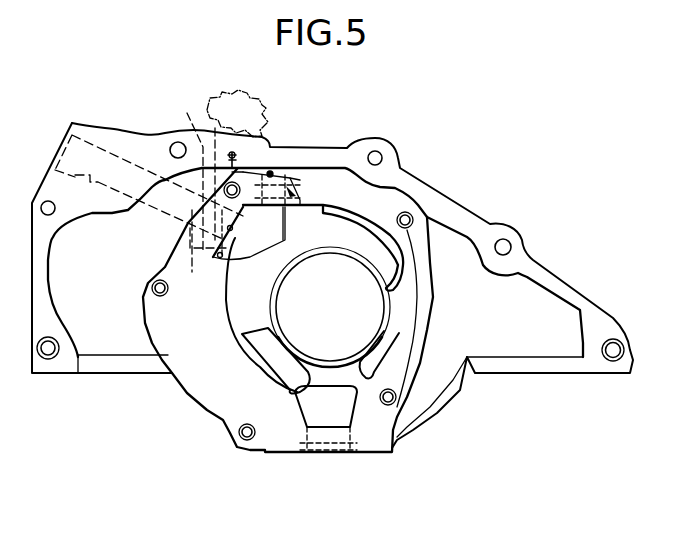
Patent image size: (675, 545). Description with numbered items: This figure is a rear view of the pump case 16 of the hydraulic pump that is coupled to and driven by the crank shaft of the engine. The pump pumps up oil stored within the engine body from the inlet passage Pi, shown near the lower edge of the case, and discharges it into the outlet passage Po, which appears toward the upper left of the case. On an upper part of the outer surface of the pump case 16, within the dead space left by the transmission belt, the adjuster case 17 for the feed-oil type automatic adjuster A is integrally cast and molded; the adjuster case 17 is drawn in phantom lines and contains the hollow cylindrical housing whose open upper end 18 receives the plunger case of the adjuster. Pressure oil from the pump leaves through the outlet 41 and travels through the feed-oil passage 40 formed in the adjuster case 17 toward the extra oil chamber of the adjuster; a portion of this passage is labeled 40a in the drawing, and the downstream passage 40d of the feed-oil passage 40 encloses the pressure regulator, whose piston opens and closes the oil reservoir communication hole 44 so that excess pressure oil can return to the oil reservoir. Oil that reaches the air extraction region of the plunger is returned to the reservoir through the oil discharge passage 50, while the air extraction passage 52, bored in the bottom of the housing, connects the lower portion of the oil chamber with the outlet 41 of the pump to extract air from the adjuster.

The pump case 16 is at (403, 175).
The adjuster case 17 is at (183, 283).
The open upper end 18 is at (162, 159).
The feed-oil passage 40 is at (292, 200).
The lever arm portion 40a is at (266, 222).
The downstream passage 40d is at (315, 180).
The outlet 41 is at (222, 236).
The oil reservoir communication hole 44 is at (300, 168).
The oil discharge passage 50 is at (238, 168).
The air extraction passage 52 is at (248, 238).
The feed-oil type automatic adjuster A is at (262, 110).
The outlet passage Po is at (149, 187).
The inlet passage Pi is at (346, 447).